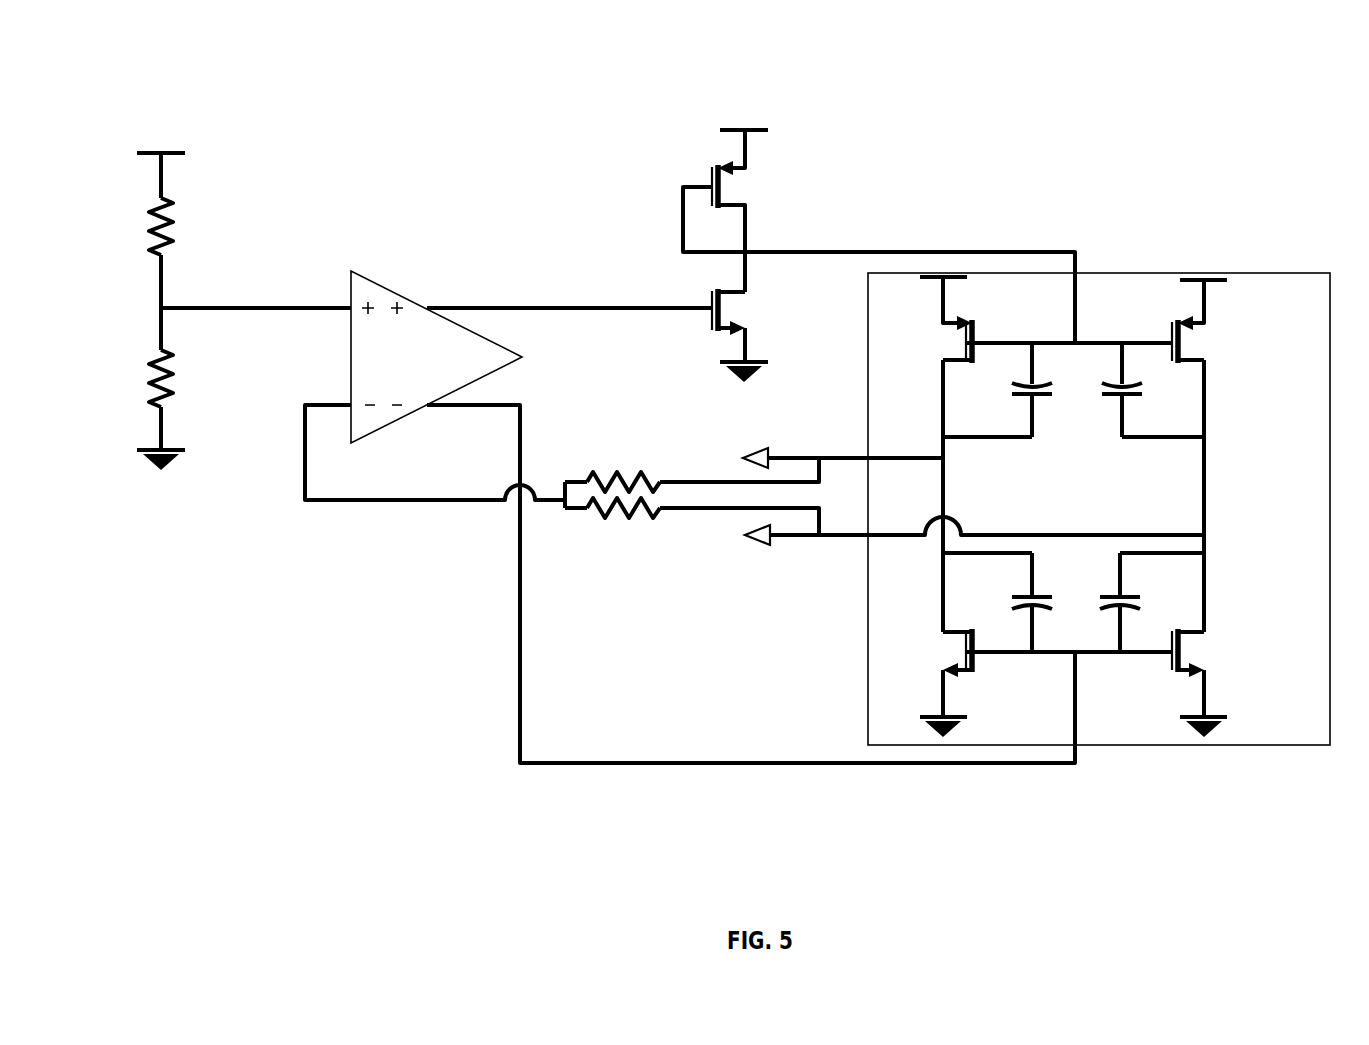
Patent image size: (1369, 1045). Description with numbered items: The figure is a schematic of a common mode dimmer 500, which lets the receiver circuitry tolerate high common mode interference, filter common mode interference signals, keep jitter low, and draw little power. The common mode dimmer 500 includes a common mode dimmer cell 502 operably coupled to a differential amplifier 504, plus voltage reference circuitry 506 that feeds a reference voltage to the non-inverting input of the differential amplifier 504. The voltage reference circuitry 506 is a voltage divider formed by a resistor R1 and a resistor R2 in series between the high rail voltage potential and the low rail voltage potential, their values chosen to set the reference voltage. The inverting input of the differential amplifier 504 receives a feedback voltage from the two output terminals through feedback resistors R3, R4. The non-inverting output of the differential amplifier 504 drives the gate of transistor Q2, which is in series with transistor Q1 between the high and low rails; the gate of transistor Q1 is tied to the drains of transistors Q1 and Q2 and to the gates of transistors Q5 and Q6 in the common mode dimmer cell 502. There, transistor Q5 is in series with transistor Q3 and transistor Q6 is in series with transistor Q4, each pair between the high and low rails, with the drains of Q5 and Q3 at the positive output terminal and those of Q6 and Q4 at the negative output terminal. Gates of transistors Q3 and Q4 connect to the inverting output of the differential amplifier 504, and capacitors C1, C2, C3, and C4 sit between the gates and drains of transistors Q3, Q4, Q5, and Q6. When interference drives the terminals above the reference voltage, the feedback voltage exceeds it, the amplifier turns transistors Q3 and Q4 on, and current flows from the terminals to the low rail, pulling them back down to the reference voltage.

The common mode dimmer 500 is at (1268, 88).
The common mode dimmer cell 502 is at (1247, 273).
The differential amplifier 504 is at (405, 298).
The voltage reference circuitry 506 is at (215, 211).
The resistor R1 is at (144, 226).
The resistor R2 is at (144, 378).
The feedback resistor R3 is at (623, 466).
The feedback resistor R4 is at (623, 526).
The transistor Q1 is at (746, 193).
The transistor Q2 is at (735, 346).
The transistor Q3 is at (939, 683).
The transistor Q4 is at (1199, 683).
The transistor Q5 is at (939, 320).
The transistor Q6 is at (1199, 321).
The capacitor C1 is at (1014, 602).
The capacitor C2 is at (1137, 602).
The capacitor C3 is at (1014, 390).
The capacitor C4 is at (1138, 390).